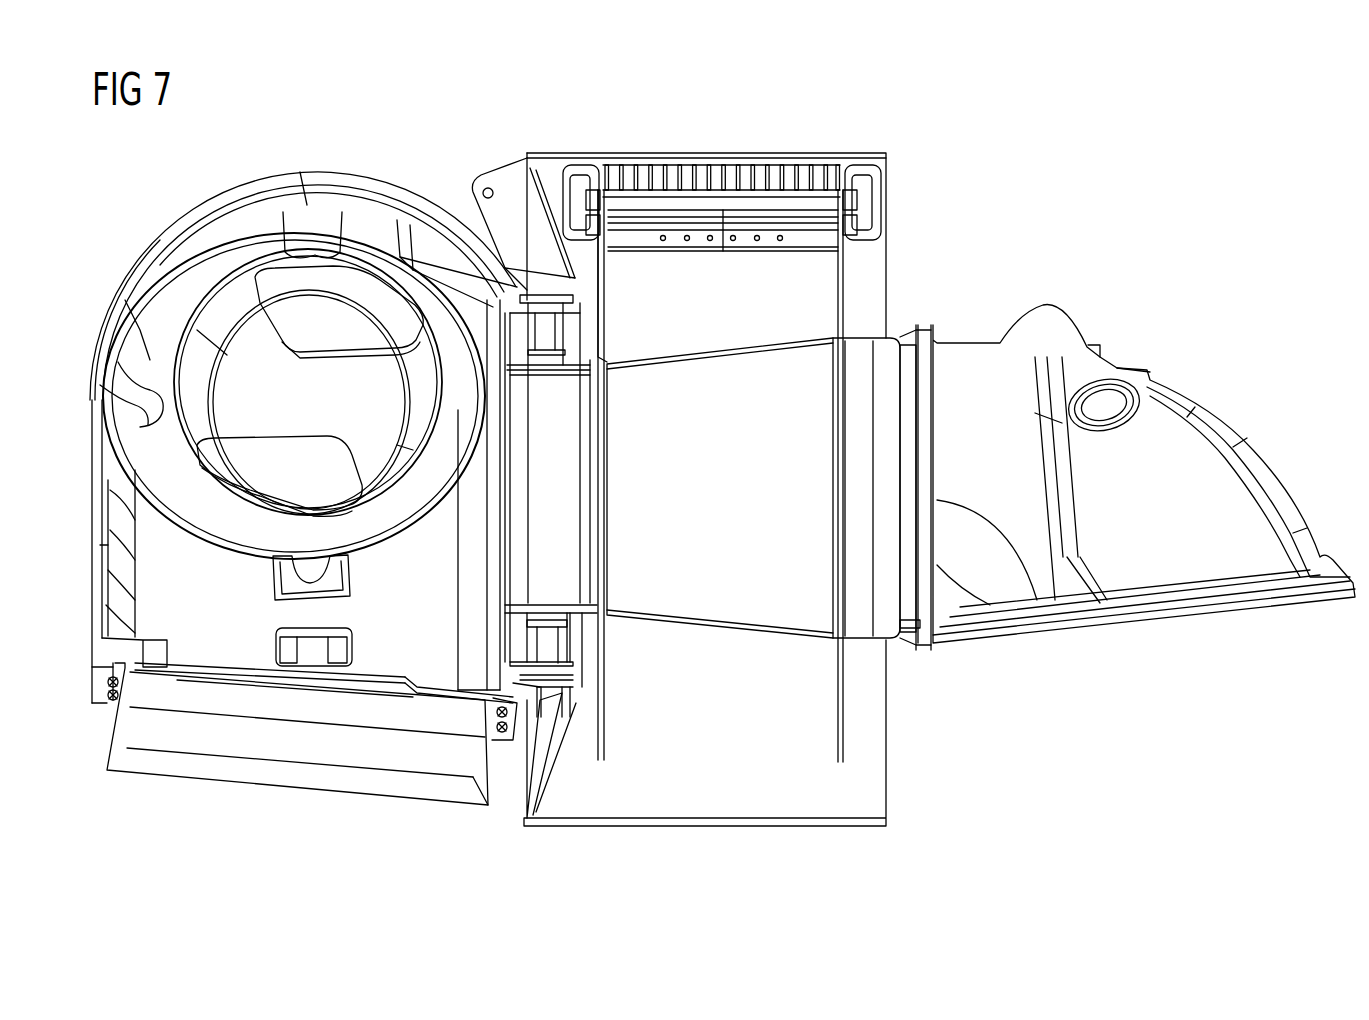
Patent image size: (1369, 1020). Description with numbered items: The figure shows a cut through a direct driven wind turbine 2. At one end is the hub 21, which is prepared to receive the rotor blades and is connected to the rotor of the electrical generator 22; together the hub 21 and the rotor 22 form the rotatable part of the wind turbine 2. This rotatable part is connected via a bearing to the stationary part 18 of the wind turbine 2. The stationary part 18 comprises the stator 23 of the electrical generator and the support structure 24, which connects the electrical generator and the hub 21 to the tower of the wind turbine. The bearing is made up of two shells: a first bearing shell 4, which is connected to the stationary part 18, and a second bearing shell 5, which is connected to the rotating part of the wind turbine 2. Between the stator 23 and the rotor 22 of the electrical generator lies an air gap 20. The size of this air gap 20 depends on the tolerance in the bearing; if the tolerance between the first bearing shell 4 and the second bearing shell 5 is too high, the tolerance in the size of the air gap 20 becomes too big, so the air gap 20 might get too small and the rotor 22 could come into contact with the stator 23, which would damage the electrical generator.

The direct driven wind turbine 2 is at (1070, 179).
The first bearing shell 4 is at (575, 635).
The second bearing shell 5 is at (545, 640).
The stationary part 18 is at (765, 630).
The air gap 20 is at (778, 162).
The hub 21 is at (213, 189).
The rotor of the electrical generator 22 is at (598, 155).
The stator 23 is at (665, 163).
The support structure 24 is at (1215, 426).